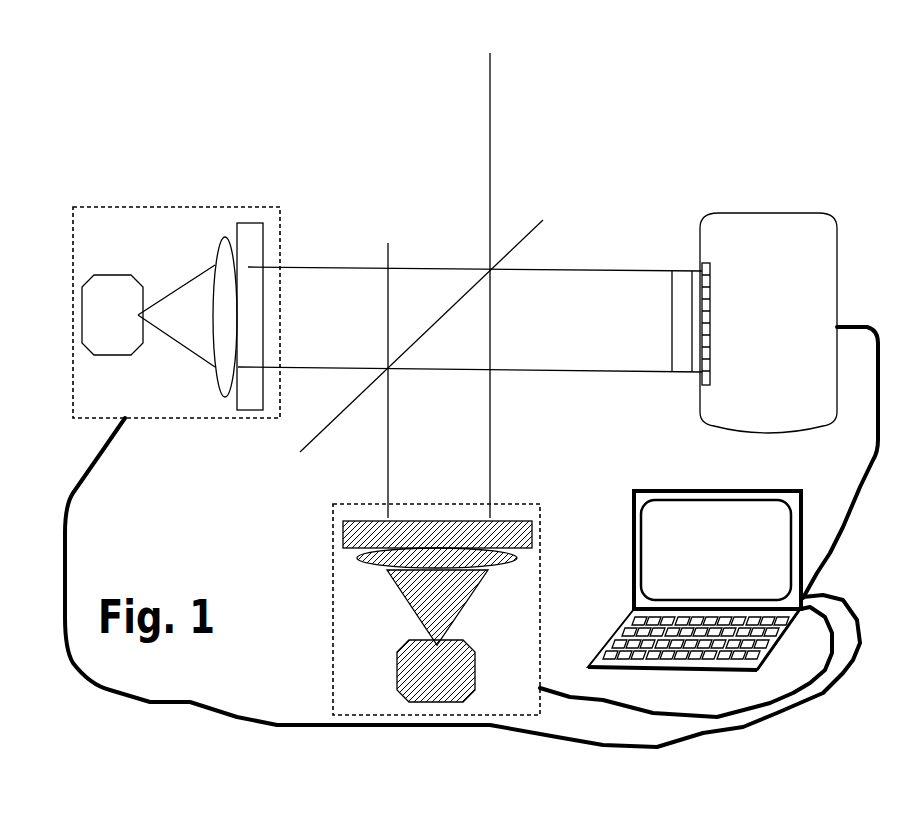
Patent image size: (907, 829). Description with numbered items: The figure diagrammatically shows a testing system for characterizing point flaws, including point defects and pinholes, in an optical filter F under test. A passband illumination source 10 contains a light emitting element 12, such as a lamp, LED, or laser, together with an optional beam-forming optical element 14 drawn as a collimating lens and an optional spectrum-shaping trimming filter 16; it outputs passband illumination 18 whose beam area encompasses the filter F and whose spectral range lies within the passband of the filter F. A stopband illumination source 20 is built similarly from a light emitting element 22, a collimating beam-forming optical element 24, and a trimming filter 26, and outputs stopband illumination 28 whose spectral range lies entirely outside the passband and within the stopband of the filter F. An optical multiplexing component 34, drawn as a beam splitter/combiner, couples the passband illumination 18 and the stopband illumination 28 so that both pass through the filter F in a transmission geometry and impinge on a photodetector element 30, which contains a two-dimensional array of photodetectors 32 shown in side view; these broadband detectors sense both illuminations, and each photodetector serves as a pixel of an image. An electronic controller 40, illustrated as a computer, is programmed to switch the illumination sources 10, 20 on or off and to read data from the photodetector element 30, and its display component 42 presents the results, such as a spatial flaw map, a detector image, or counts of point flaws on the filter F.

The passband illumination source 10 is at (128, 207).
The light emitting element 12 is at (88, 315).
The beam-forming optical element 14 is at (230, 237).
The trimming filter 16 is at (252, 223).
The passband illumination 18 is at (352, 267).
The stopband illumination source 20 is at (370, 503).
The light emitting element 22 is at (398, 670).
The beam-forming optical element 24 is at (357, 558).
The trimming filter 26 is at (343, 532).
The stopband illumination 28 is at (490, 460).
The photodetector element 30 is at (769, 213).
The array of photodetectors 32 is at (710, 292).
The optical multiplexing component 34 is at (543, 220).
The electronic controller 40 is at (578, 522).
The display component 42 is at (716, 550).
The optical filter F is at (682, 375).